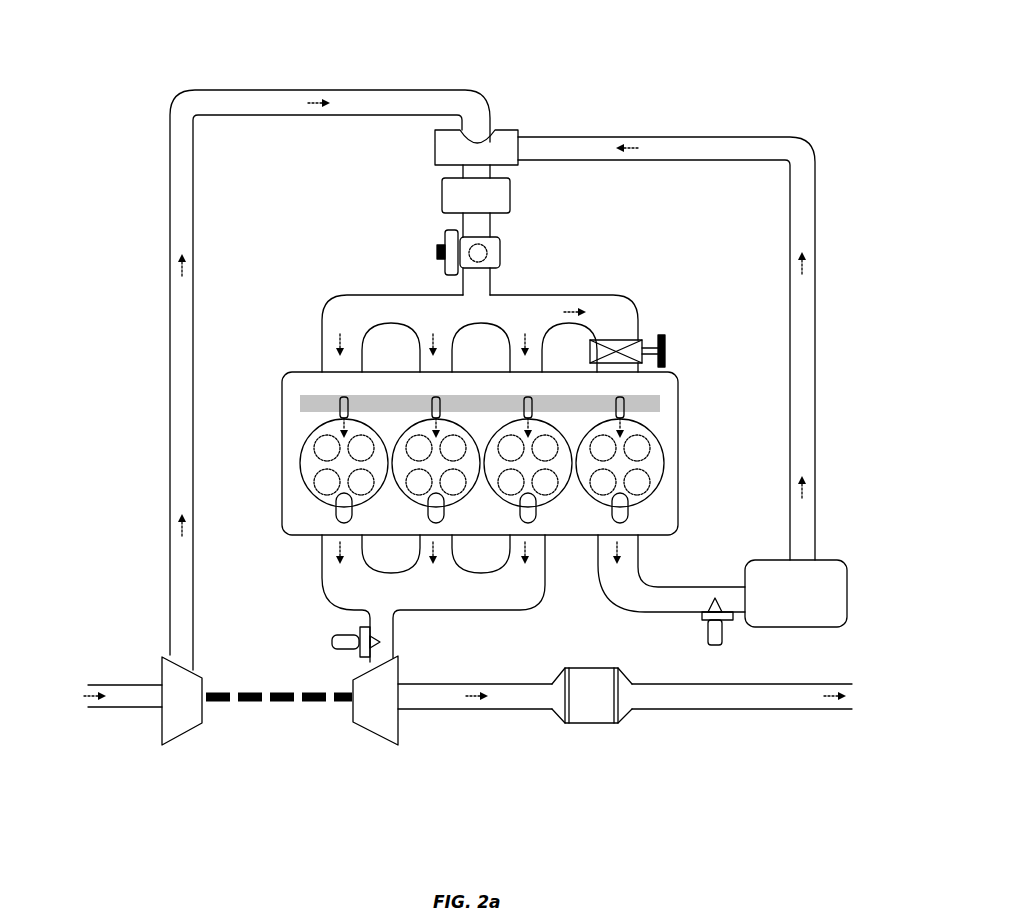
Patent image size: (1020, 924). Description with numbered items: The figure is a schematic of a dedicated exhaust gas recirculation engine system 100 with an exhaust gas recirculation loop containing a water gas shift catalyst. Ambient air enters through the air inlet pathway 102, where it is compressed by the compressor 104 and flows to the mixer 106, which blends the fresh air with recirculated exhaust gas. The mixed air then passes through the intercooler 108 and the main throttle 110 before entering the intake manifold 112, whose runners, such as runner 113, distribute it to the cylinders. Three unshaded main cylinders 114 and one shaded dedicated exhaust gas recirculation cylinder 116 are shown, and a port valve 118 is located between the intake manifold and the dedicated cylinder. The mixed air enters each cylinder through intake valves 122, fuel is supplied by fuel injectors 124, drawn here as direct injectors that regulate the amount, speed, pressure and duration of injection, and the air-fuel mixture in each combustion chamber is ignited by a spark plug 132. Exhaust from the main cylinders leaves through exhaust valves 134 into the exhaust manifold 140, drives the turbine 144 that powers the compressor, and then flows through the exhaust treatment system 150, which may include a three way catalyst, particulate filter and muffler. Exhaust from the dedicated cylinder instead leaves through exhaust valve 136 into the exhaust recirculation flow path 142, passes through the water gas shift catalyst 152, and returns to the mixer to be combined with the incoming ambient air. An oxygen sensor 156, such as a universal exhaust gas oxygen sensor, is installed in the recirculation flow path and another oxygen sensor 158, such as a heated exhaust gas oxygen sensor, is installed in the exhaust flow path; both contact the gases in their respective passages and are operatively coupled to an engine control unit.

The engine system 100 is at (166, 55).
The air inlet pathway 102 is at (178, 618).
The compressor 104 is at (175, 727).
The mixer 106 is at (504, 128).
The intercooler 108 is at (505, 193).
The main throttle 110 is at (488, 255).
The intake manifold 112 is at (347, 297).
The intake runner 113 is at (336, 350).
The main cylinder 114 is at (318, 430).
The dedicated exhaust gas recirculation cylinder 116 is at (647, 460).
The port valve 118 is at (646, 340).
The intake valve 122 is at (312, 445).
The fuel injector 124 is at (337, 512).
The spark plug 132 is at (617, 413).
The exhaust valve 134 is at (313, 478).
The exhaust valve 136 is at (630, 480).
The exhaust manifold 140 is at (442, 583).
The exhaust recirculation flow path 142 is at (700, 585).
The turbine 144 is at (378, 727).
The exhaust treatment system 150 is at (583, 708).
The water gas shift catalyst 152 is at (796, 593).
The oxygen sensor 156 is at (716, 650).
The oxygen sensor 158 is at (332, 640).